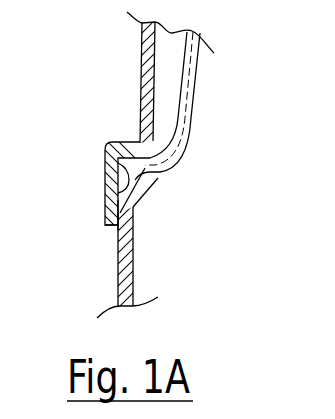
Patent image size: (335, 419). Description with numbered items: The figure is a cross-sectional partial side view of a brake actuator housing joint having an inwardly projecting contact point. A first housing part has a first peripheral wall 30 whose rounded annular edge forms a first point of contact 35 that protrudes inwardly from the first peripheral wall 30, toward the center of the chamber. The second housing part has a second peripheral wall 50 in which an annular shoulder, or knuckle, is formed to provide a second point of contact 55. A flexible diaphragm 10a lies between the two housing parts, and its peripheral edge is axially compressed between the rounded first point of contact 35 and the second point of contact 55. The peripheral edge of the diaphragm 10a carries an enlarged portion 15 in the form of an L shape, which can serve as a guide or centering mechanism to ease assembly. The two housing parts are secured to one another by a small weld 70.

The second peripheral wall 50 is at (108, 82).
The flexible diaphragm 10a is at (194, 90).
The second point of contact 55 is at (98, 187).
The enlarged portion 15 is at (120, 180).
The first point of contact 35 is at (150, 175).
The weld 70 is at (122, 227).
The first peripheral wall 30 is at (86, 256).